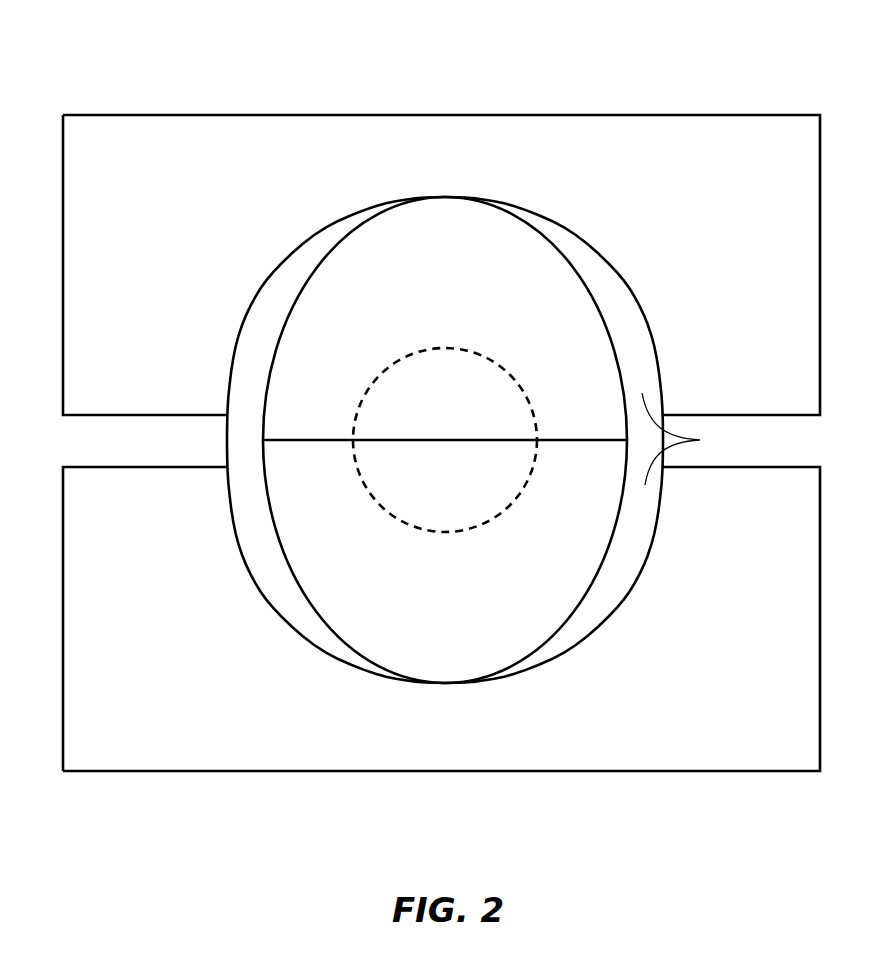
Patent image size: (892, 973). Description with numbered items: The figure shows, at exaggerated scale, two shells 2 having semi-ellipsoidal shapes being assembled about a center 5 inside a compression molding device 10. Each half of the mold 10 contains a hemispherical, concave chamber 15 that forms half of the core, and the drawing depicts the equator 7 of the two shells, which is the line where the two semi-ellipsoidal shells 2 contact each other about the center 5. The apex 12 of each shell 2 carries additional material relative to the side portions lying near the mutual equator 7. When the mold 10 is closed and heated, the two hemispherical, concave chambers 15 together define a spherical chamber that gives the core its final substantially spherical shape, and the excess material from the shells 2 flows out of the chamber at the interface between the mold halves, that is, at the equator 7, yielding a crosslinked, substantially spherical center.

The compression molding device 10 is at (266, 104).
The shell 2 is at (423, 232).
The apex 12 is at (445, 197).
The center 5 is at (412, 416).
The equator 7 is at (555, 442).
The hemispherical concave chamber 15 is at (700, 440).